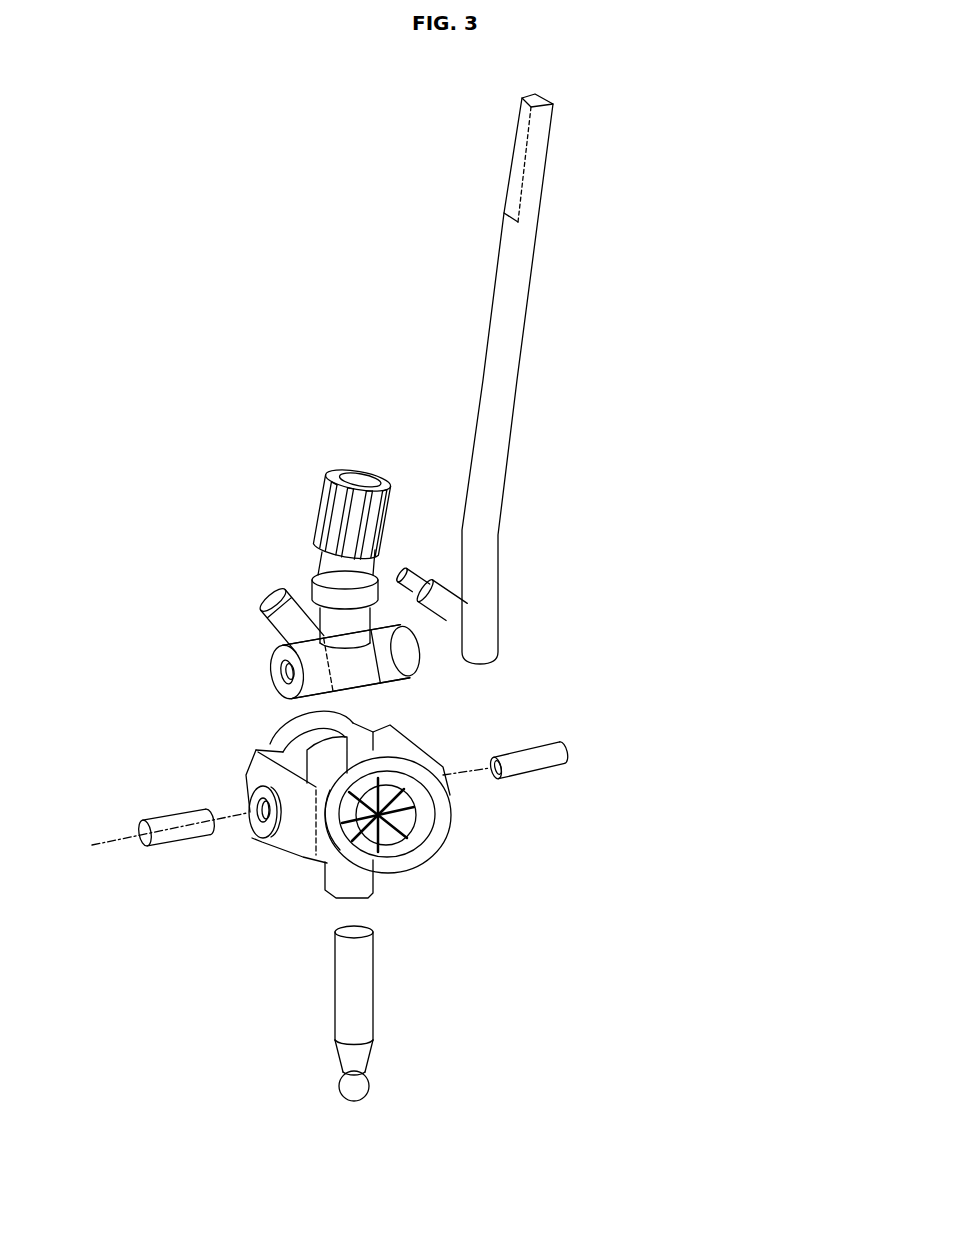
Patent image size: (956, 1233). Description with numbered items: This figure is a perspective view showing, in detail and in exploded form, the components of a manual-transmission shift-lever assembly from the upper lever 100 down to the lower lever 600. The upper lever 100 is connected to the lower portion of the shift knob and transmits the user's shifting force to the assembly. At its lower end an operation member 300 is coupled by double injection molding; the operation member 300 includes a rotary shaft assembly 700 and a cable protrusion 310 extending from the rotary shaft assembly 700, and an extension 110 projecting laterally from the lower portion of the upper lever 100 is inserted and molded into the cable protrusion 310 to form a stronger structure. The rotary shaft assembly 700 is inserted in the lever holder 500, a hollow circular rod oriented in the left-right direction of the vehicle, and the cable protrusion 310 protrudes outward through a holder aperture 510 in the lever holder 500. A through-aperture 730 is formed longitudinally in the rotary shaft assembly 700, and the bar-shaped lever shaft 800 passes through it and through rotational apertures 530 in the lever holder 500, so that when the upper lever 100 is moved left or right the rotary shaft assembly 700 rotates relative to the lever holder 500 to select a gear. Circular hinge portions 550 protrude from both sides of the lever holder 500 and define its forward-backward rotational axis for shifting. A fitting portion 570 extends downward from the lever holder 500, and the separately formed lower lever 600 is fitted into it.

The upper lever 100 is at (507, 363).
The extension 110 is at (433, 593).
The operation member 300 is at (292, 566).
The cable protrusion 310 is at (270, 596).
The rotary shaft assembly 700 is at (257, 665).
The through-aperture 730 is at (287, 672).
The lever holder 500 is at (355, 836).
The holder aperture 510 is at (332, 759).
The rotational apertures 530 is at (258, 826).
The circular hinge portion 550 is at (405, 843).
The fitting portion 570 is at (352, 884).
The lower lever 600 is at (368, 1018).
The lever shaft 800 is at (172, 823).